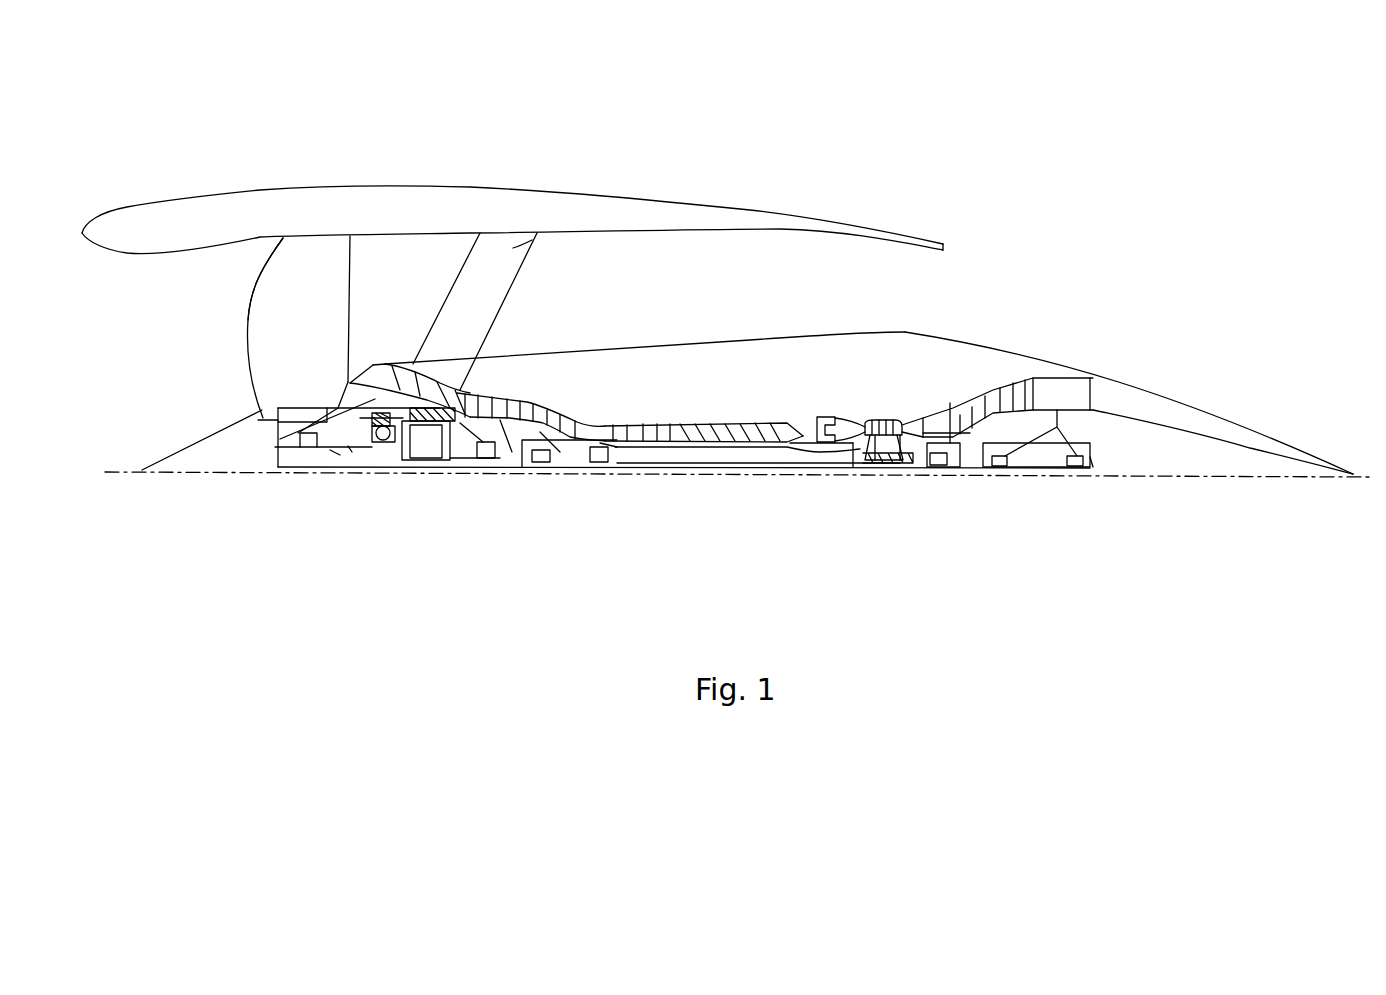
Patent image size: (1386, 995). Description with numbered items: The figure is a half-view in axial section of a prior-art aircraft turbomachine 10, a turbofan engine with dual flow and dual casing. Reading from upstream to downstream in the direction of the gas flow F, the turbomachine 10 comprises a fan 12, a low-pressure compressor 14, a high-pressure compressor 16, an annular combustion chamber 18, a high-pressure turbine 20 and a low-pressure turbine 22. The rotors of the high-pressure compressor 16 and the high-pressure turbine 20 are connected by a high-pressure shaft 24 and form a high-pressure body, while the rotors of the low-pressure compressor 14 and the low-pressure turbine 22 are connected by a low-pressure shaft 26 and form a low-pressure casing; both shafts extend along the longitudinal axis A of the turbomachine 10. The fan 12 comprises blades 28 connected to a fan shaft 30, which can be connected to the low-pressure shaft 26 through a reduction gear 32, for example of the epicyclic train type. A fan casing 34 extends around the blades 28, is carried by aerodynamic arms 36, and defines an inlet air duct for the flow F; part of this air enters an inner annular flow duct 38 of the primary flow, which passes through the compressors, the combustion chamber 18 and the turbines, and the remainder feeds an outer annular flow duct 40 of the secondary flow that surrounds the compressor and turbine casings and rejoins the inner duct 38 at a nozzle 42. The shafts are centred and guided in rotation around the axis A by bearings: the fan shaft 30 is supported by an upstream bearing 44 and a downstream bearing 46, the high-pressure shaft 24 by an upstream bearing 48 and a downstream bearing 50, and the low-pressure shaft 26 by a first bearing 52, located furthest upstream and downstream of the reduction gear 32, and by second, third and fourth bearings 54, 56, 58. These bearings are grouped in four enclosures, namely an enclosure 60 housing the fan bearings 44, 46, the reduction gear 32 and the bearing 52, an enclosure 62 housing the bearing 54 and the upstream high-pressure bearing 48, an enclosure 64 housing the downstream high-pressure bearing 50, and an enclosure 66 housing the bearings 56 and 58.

The aircraft turbomachine 10 is at (1128, 250).
The fan 12 is at (283, 304).
The low-pressure compressor 14 is at (535, 403).
The high-pressure compressor 16 is at (667, 423).
The annular combustion chamber 18 is at (853, 467).
The high-pressure turbine 20 is at (887, 420).
The low-pressure turbine 22 is at (1022, 410).
The high-pressure shaft 24 is at (641, 448).
The low-pressure shaft 26 is at (775, 470).
The blades 28 is at (315, 253).
The fan shaft 30 is at (353, 453).
The reduction gear 32 is at (425, 448).
The fan casing 34 is at (463, 204).
The aerodynamic arms 36 is at (513, 248).
The inner annular flow duct 38 is at (680, 408).
The outer annular flow duct 40 is at (413, 264).
The nozzle 42 is at (1122, 398).
The upstream bearing 44 is at (303, 433).
The downstream bearing 46 is at (380, 443).
The upstream bearing 48 is at (607, 462).
The downstream bearing 50 is at (947, 467).
The first bearing 52 is at (487, 452).
The second bearing 54 is at (543, 470).
The third bearing 56 is at (1003, 440).
The fourth bearing 58 is at (1075, 470).
The enclosure 60 is at (267, 457).
The enclosure 62 is at (580, 408).
The enclosure 64 is at (973, 453).
The enclosure 66 is at (1090, 457).
The longitudinal axis A is at (125, 470).
The gas flow F is at (160, 308).